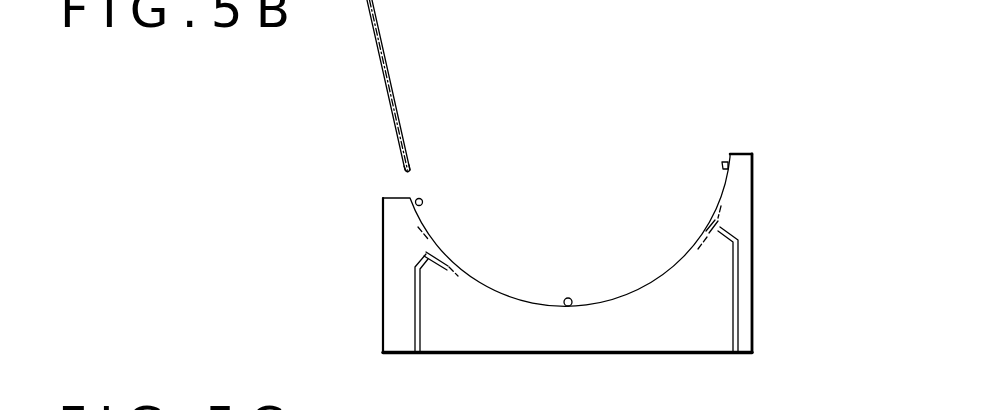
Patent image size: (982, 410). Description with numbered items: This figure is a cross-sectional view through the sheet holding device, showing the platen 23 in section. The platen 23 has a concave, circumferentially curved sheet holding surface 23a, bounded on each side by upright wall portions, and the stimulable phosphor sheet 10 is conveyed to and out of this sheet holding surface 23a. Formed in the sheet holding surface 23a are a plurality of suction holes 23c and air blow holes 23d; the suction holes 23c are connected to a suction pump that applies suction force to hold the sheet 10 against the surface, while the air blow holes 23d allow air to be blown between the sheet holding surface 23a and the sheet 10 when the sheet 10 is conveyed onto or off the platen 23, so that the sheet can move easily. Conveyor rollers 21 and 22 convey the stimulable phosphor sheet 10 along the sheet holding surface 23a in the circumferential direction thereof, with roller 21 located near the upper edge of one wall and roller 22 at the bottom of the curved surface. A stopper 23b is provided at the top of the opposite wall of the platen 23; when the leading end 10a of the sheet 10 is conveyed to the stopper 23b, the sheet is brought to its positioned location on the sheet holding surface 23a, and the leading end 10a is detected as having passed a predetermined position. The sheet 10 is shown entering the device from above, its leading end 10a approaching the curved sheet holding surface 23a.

The stimulable phosphor sheet 10 is at (383, 32).
The leading end 10a is at (412, 165).
The conveyor roller 21 is at (422, 199).
The conveyor roller 22 is at (572, 302).
The platen 23 is at (745, 187).
The sheet holding surface 23a is at (724, 162).
The stopper 23b is at (729, 150).
The suction holes 23c is at (428, 262).
The air blow holes 23d is at (455, 263).